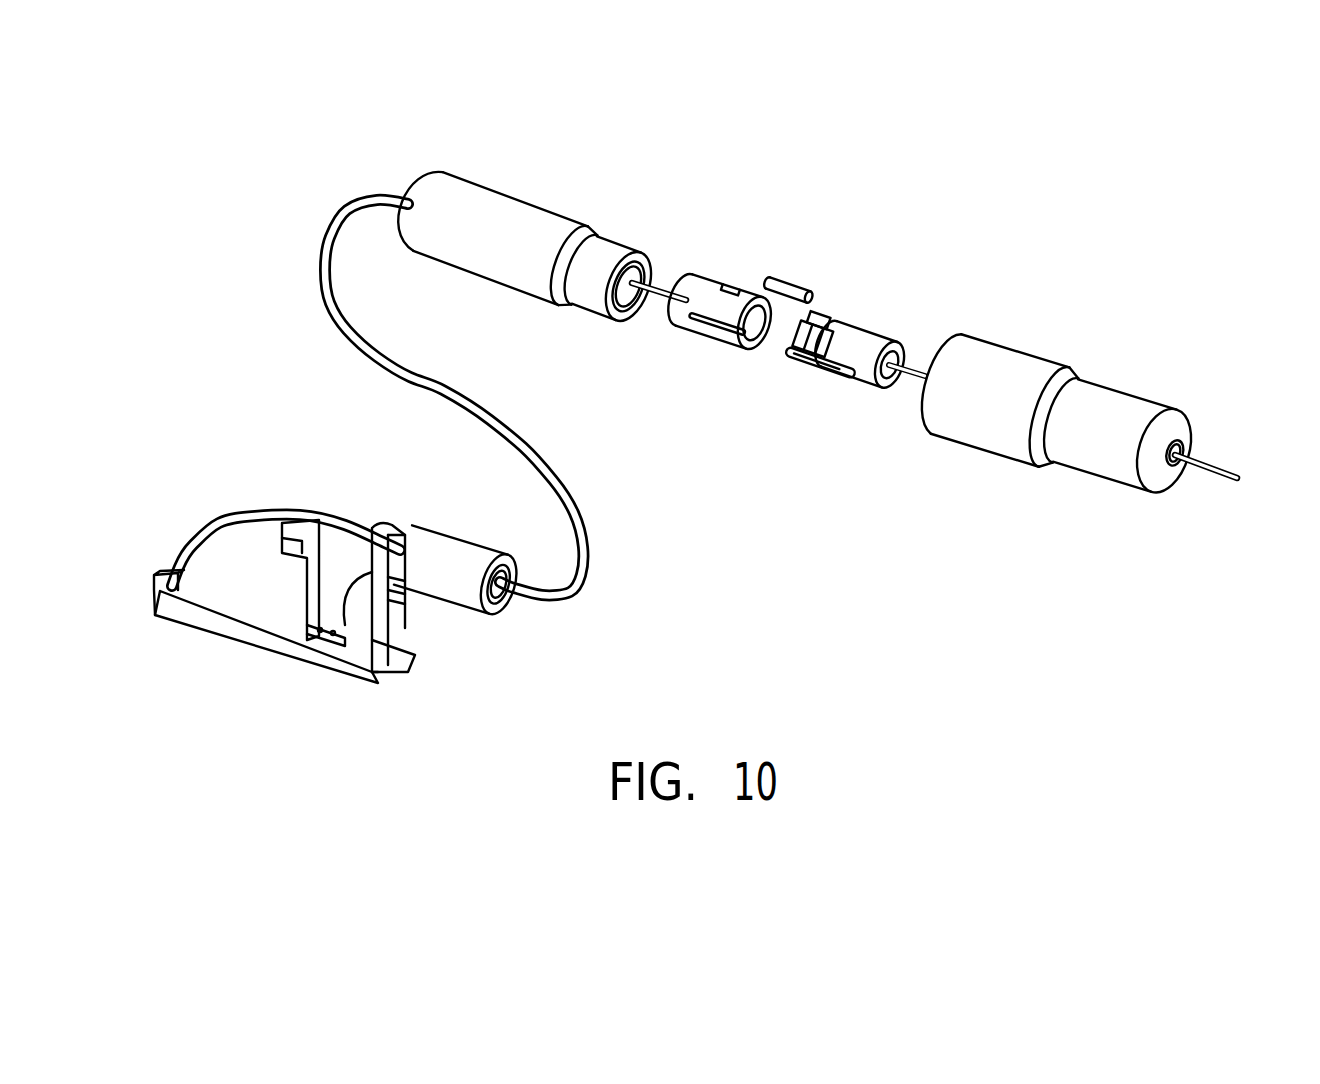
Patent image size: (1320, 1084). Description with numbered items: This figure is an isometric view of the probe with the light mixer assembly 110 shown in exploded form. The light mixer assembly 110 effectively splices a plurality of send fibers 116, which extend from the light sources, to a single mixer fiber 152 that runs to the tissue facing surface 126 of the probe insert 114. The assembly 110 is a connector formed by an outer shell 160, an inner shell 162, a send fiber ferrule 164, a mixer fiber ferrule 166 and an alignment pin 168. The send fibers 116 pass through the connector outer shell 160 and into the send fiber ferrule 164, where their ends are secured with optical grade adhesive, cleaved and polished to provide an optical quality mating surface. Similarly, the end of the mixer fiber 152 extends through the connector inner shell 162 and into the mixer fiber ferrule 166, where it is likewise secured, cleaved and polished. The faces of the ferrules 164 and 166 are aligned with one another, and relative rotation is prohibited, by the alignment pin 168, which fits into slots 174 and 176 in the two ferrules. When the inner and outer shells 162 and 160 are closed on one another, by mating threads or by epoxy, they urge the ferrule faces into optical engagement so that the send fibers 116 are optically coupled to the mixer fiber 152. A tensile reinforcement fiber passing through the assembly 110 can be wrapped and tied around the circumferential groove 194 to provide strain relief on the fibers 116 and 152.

The light mixer assembly 110 is at (839, 405).
The probe insert 114 is at (223, 617).
The send fibers 116 is at (1215, 460).
The tissue facing surface 126 is at (247, 647).
The mixer fiber 152 is at (483, 413).
The outer shell 160 is at (988, 448).
The inner shell 162 is at (530, 203).
The send fiber ferrule 164 is at (875, 338).
The mixer fiber ferrule 166 is at (714, 272).
The alignment pin 168 is at (783, 267).
The slot 174 is at (815, 316).
The slot 176 is at (747, 293).
The circumferential groove 194 is at (820, 373).